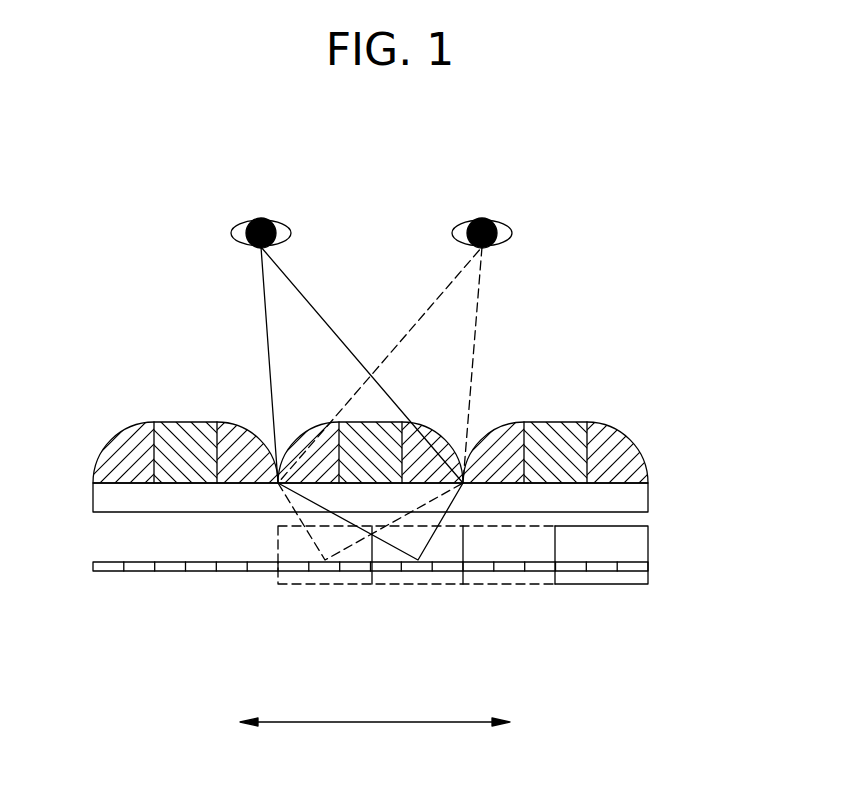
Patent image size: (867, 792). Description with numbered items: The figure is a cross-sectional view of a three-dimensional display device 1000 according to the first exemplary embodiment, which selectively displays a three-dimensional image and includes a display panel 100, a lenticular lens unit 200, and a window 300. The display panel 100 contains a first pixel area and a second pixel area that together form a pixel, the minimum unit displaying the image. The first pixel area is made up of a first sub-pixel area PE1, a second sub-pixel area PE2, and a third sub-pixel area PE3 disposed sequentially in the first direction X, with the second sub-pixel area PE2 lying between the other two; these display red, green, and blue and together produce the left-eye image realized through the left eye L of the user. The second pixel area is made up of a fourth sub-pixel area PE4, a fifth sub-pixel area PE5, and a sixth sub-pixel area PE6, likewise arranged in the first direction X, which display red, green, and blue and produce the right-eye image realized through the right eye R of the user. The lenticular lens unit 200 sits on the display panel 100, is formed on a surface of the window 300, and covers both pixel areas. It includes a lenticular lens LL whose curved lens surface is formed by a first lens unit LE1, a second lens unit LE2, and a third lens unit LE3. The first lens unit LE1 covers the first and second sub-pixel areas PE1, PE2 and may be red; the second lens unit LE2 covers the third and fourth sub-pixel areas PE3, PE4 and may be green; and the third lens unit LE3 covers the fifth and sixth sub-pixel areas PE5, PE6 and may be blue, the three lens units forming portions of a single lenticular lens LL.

The 3D display device 1000 is at (388, 138).
The lenticular lens unit 200 is at (647, 432).
The window 300 is at (632, 496).
The display panel 100 is at (662, 569).
The lenticular lens LL is at (305, 263).
The first lens unit LE1 is at (320, 452).
The second lens unit LE2 is at (372, 447).
The third lens unit LE3 is at (427, 450).
The right eye R is at (261, 216).
The left eye L is at (482, 216).
The first sub-pixel area PE1 is at (293, 566).
The second sub-pixel area PE2 is at (325, 566).
The third sub-pixel area PE3 is at (357, 566).
The fourth sub-pixel area PE4 is at (385, 566).
The fifth sub-pixel area PE5 is at (417, 566).
The sixth sub-pixel area PE6 is at (448, 566).
The first direction X is at (381, 725).